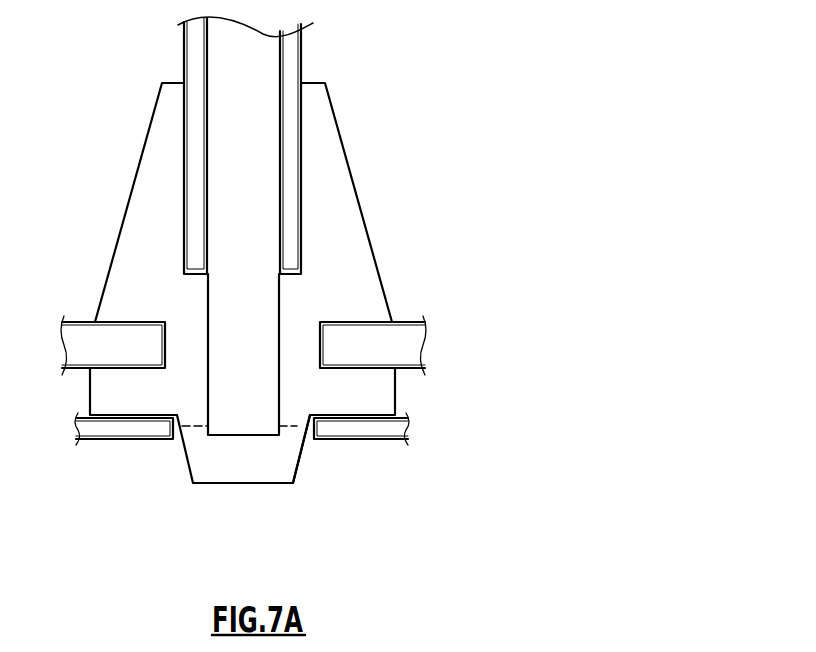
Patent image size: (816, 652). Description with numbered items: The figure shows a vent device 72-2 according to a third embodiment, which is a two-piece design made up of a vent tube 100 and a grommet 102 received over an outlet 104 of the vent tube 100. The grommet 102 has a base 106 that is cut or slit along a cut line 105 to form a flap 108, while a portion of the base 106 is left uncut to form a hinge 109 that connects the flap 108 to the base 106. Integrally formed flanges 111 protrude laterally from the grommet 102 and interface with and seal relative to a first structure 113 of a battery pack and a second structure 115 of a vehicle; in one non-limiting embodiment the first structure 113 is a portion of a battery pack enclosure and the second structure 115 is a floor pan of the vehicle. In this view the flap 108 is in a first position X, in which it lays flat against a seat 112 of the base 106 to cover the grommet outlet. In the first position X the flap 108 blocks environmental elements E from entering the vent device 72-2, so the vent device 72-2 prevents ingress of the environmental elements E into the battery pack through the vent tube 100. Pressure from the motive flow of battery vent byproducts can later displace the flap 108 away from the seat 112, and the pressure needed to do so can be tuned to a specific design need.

The vent device 72-2 is at (377, 80).
The vent tube 100 is at (292, 66).
The grommet 102 is at (348, 208).
The outlet 104 is at (223, 228).
The cut line 105 is at (197, 428).
The base 106 is at (167, 456).
The flap 108 is at (268, 473).
The hinge 109 is at (298, 427).
The flanges 111 is at (106, 318).
The seat 112 is at (197, 426).
The first structure 113 is at (115, 335).
The second structure 115 is at (88, 441).
The environmental elements E is at (243, 489).
The first position X is at (124, 469).